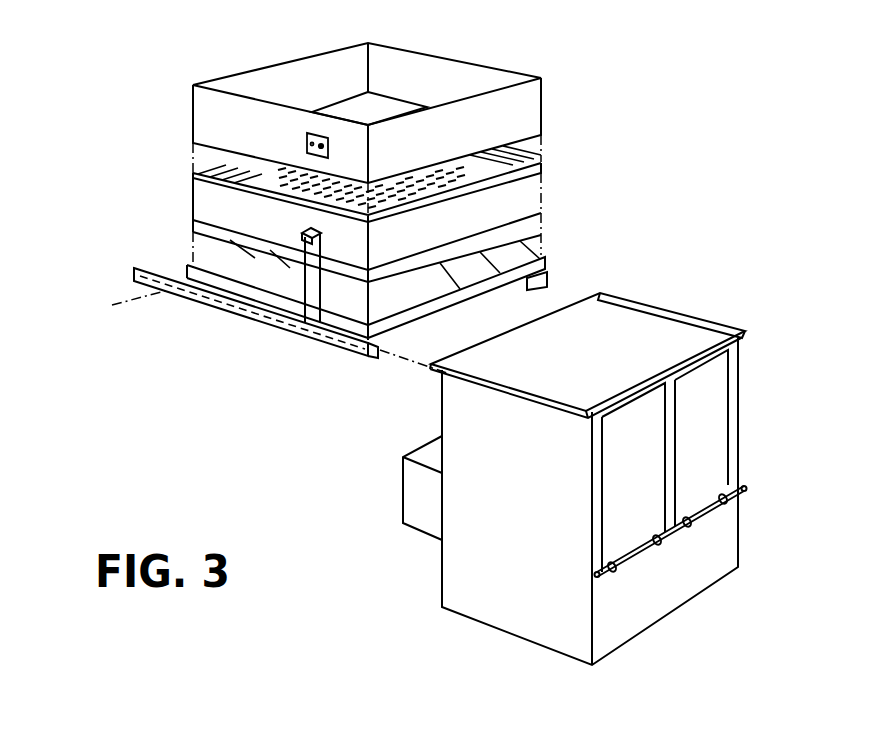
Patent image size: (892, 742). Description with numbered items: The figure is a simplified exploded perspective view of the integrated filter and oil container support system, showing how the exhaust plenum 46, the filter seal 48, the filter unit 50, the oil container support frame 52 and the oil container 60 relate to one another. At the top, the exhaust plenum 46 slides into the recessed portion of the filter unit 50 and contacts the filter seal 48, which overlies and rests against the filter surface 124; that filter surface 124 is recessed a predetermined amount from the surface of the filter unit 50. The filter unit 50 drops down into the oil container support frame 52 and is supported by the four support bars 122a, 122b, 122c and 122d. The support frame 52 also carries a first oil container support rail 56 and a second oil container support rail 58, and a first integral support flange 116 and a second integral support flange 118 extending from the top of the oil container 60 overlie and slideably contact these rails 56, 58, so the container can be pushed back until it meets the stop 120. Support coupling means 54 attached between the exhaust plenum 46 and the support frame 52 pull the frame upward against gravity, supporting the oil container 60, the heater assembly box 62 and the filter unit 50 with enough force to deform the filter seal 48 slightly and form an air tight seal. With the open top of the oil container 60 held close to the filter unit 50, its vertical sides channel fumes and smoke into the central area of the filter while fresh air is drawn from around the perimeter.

The exhaust plenum 46 is at (522, 106).
The support coupling means 54 is at (308, 134).
The filter seal 48 is at (541, 165).
The filter surface 124 is at (483, 182).
The filter unit 50 is at (542, 216).
The stop 120 is at (112, 305).
The support bar 122a is at (546, 250).
The support bar 122b is at (205, 263).
The support bar 122c is at (192, 278).
The support bar 122d is at (440, 300).
The second oil container support rail 58 is at (546, 276).
The oil container support frame 52 is at (230, 305).
The first oil container support rail 56 is at (330, 340).
The first integral support flange 116 is at (490, 388).
The second integral support flange 118 is at (662, 312).
The oil container 60 is at (480, 604).
The heater assembly box 62 is at (415, 492).